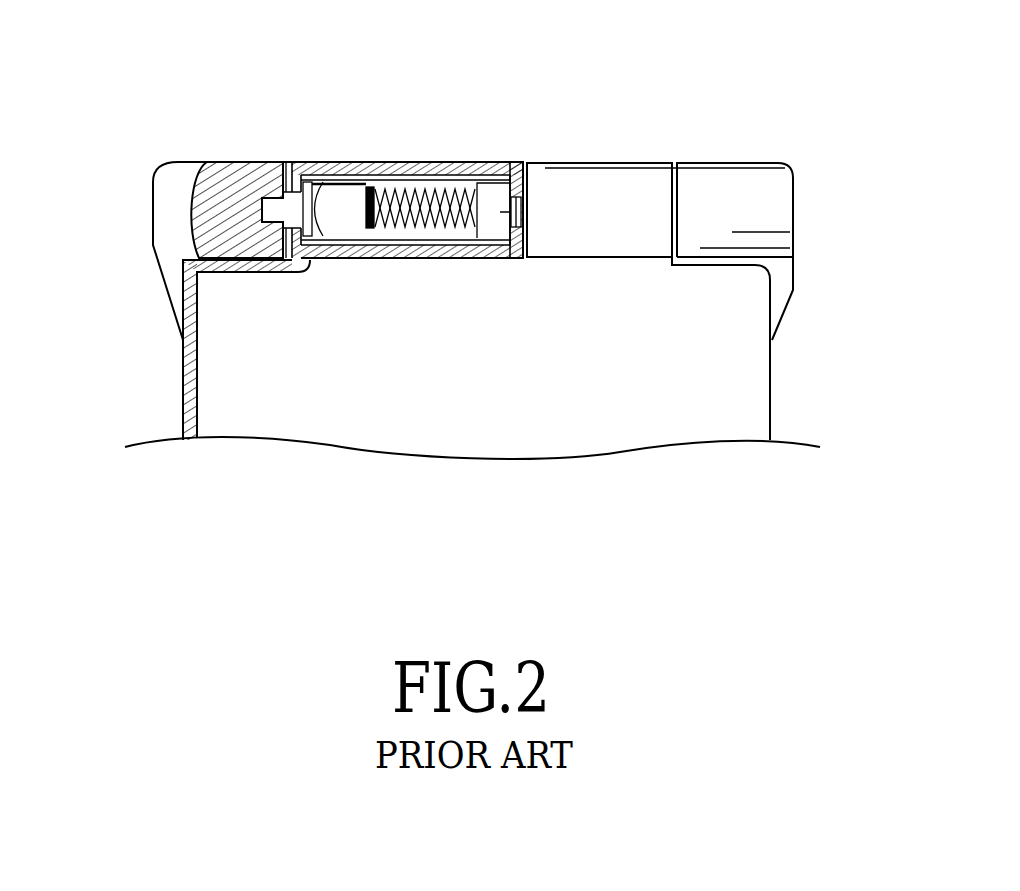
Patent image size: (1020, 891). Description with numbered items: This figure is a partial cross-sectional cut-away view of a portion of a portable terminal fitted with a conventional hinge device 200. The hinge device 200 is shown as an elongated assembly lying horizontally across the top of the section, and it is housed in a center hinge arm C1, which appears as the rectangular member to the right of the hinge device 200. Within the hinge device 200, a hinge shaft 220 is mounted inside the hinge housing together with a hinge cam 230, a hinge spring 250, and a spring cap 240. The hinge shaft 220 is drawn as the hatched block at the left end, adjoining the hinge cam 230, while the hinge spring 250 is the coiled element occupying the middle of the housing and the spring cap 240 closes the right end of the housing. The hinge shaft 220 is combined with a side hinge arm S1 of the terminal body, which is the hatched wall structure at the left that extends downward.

The hinge device 200 is at (420, 139).
The hinge shaft 220 is at (217, 162).
The hinge cam 230 is at (342, 198).
The spring cap 240 is at (512, 162).
The hinge spring 250 is at (418, 162).
The side hinge arm S1 is at (167, 241).
The center hinge arm C1 is at (624, 197).